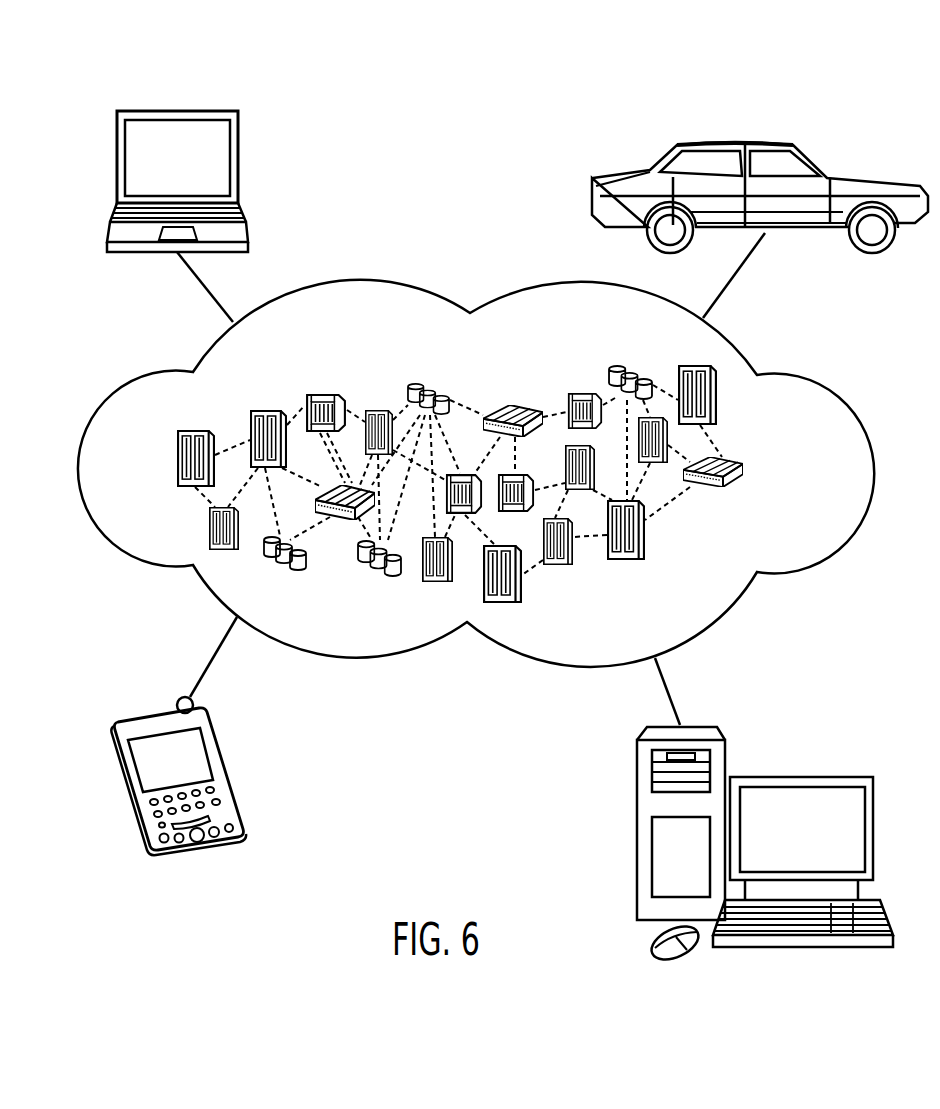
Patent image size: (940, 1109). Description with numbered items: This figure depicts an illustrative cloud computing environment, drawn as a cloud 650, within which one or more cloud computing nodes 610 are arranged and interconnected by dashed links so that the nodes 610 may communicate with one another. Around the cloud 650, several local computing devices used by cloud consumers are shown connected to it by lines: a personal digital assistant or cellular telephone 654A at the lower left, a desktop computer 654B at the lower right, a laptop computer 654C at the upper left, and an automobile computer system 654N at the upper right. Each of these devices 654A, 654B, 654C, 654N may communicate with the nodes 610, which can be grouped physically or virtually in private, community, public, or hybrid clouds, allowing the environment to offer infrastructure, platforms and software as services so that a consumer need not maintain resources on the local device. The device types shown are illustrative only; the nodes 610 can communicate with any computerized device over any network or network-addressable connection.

The laptop computer 654C is at (178, 110).
The automobile computer system 654N is at (739, 138).
The network cloud 650 is at (775, 368).
The cloud computing nodes 610 is at (750, 471).
The personal digital assistant (PDA) or cellular telephone 654A is at (158, 710).
The desktop computer 654B is at (802, 773).